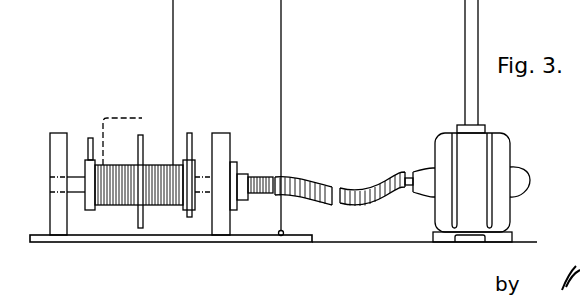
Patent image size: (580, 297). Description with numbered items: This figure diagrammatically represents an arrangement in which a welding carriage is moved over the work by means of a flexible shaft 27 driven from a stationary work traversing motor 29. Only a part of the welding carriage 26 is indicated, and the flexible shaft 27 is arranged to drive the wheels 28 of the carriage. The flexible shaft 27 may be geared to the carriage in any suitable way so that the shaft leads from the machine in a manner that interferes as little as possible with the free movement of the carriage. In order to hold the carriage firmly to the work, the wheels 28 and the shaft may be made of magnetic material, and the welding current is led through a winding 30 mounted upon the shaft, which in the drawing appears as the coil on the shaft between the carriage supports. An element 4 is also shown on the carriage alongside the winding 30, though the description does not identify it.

The rod 4 is at (138, 214).
The winding 30 is at (150, 200).
The welding carriage 26 is at (192, 137).
The wheels 28 is at (230, 147).
The flexible shaft 27 is at (320, 185).
The traversing motor 29 is at (500, 145).